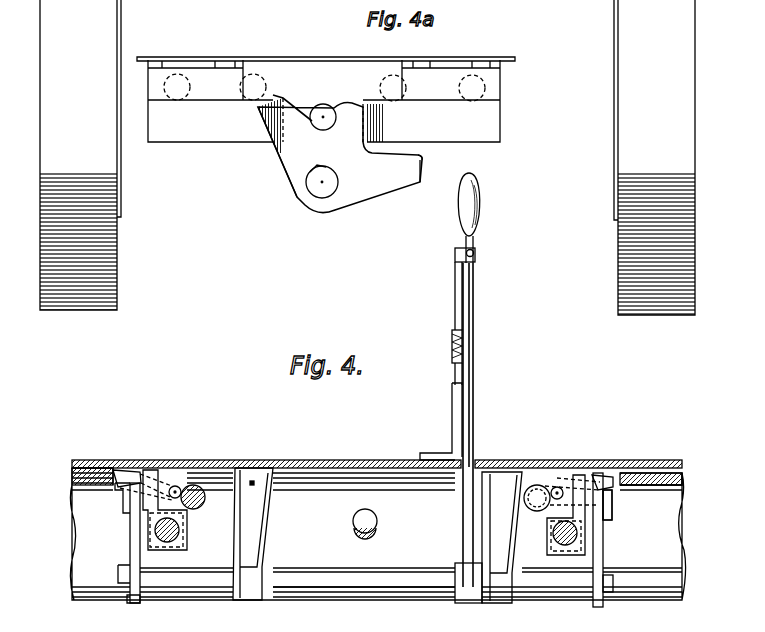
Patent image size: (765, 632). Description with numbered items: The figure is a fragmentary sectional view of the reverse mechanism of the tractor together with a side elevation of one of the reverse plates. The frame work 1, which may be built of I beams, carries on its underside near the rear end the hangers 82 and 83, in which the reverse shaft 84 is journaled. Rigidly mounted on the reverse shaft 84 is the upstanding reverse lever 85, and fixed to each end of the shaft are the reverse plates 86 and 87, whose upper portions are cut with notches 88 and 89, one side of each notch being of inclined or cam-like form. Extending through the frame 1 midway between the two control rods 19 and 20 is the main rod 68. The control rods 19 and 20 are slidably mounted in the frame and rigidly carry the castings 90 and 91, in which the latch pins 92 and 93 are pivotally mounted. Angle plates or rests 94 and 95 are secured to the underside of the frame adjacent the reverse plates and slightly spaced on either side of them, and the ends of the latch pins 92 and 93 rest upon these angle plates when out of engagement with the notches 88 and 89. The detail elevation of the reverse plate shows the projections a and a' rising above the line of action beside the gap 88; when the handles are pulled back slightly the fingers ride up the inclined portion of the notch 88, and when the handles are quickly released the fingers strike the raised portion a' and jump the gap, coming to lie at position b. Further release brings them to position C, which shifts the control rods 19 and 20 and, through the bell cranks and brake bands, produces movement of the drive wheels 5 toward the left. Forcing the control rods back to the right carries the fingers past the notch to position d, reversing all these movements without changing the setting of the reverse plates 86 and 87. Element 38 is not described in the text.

In FIG. 4A, the rail plate 38 is at (326, 30).
In FIG. 4A, the finger position c C is at (178, 80).
In FIG. 4A, the finger position b is at (259, 78).
In FIG. 4A, the finger position d is at (475, 83).
In FIG. 4A, the projection a is at (340, 141).
In FIG. 4A, the raised portion a' is at (421, 182).
In FIG. 4A, the notch 89 is at (328, 128).
In FIG. 4A, the reverse shaft 84 is at (320, 188).
In FIG. 4, the reverse shaft 84 is at (302, 580).
In FIG. 4A, the reverse plate 86 is at (293, 143).
In FIG. 4, the reverse plate 86 is at (137, 542).
In FIG. 4A, the notch 88 is at (423, 160).
In FIG. 4, the rim 5 is at (117, 257).
In FIG. 4, the reverse lever 85 is at (473, 405).
In FIG. 4, the frame work 1 is at (377, 534).
In FIG. 4, the hanger 83 is at (257, 520).
In FIG. 4, the hanger 82 is at (502, 537).
In FIG. 4, the reverse plate 87 is at (598, 545).
In FIG. 4, the casting 90 is at (153, 518).
In FIG. 4, the control rod 20 is at (185, 537).
In FIG. 4, the latch pin 92 is at (130, 477).
In FIG. 4, the angle plate 94 is at (110, 483).
In FIG. 4, the control rod 19 is at (552, 547).
In FIG. 4, the latch pin 93 is at (603, 482).
In FIG. 4, the angle plate 95 is at (670, 485).
In FIG. 4, the casting 91 is at (610, 510).
In FIG. 4, the main rod 68 is at (358, 540).